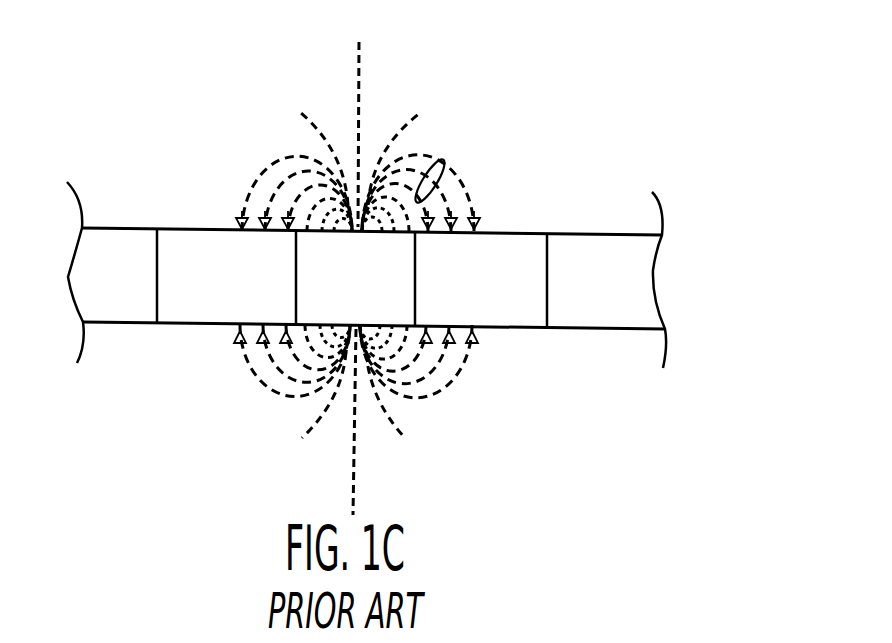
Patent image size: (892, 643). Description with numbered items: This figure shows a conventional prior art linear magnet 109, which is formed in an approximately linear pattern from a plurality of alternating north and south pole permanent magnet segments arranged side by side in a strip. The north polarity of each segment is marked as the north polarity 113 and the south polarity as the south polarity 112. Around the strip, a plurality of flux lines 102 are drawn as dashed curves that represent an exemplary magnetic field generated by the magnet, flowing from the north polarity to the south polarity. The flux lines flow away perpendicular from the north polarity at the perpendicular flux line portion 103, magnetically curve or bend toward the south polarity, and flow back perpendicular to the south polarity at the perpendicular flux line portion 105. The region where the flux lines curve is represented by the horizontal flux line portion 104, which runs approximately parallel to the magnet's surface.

The flux lines 102 is at (443, 159).
The perpendicular flux line portion at north polarity 103 is at (343, 318).
The horizontal flux line portion 104 is at (461, 406).
The perpendicular flux line portion at south polarity 105 is at (206, 333).
The linear magnet 109 is at (706, 140).
The south polarity 112 is at (511, 233).
The north polarity 113 is at (574, 235).